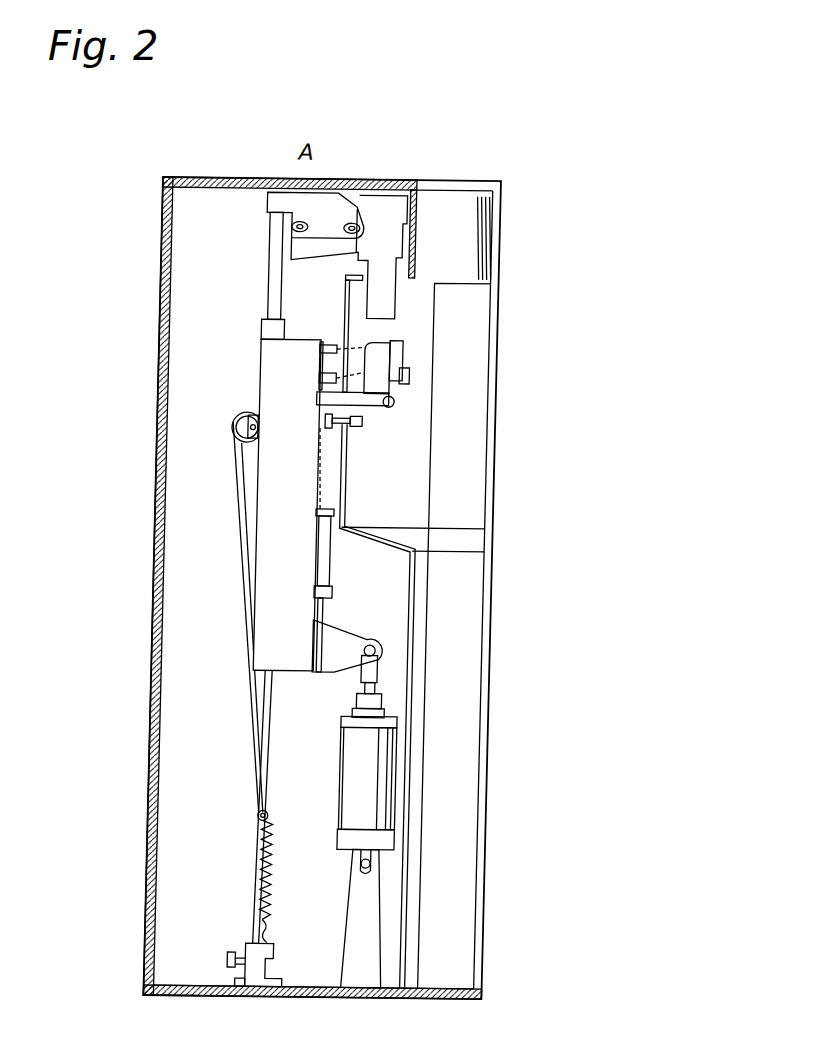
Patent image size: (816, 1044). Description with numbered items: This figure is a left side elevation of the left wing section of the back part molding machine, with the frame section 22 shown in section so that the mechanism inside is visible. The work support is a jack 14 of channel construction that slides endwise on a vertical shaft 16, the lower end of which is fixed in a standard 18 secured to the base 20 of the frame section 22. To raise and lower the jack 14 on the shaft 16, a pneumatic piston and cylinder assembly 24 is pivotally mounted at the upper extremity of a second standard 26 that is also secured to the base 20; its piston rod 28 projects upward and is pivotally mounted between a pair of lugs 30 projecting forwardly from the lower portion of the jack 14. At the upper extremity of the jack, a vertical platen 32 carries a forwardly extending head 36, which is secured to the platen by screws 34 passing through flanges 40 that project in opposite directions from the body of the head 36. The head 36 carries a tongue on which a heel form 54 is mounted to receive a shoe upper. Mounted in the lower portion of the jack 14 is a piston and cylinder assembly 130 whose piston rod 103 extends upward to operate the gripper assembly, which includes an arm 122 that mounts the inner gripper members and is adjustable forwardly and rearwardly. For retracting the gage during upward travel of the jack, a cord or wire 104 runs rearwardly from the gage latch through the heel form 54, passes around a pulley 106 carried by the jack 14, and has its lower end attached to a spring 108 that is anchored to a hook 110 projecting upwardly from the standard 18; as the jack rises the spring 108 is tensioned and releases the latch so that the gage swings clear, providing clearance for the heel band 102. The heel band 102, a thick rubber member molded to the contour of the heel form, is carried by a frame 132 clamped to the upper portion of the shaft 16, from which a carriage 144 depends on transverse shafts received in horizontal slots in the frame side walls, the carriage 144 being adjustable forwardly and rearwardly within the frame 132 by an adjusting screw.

The jack 14 is at (280, 521).
The vertical shaft 16 is at (270, 267).
The standard 18 is at (263, 946).
The base 20 is at (307, 987).
The frame section 22 is at (166, 720).
The pneumatic piston and cylinder assembly 24 is at (365, 785).
The standard 26 is at (373, 925).
The piston rod 28 is at (384, 662).
The lugs 30 is at (354, 638).
The vertical platen 32 is at (327, 340).
The screws 34 is at (359, 333).
The head 36 is at (327, 378).
The flanges 40 is at (327, 360).
The heel form 54 is at (381, 340).
The heel band 102 is at (413, 289).
The piston rod 103 is at (325, 485).
The cord or wire 104 is at (385, 384).
The pulley 106 is at (246, 442).
The spring 108 is at (288, 912).
The hook 110 is at (291, 927).
The arm 122 is at (335, 398).
The piston and cylinder assembly 130 is at (329, 551).
The frame 132 is at (328, 201).
The carriage 144 is at (321, 248).